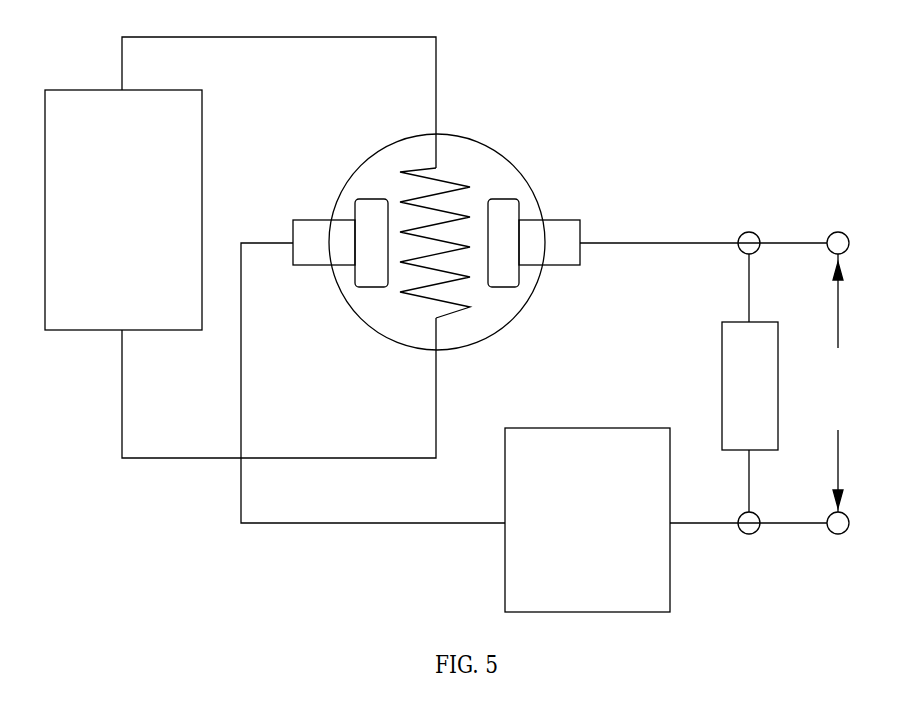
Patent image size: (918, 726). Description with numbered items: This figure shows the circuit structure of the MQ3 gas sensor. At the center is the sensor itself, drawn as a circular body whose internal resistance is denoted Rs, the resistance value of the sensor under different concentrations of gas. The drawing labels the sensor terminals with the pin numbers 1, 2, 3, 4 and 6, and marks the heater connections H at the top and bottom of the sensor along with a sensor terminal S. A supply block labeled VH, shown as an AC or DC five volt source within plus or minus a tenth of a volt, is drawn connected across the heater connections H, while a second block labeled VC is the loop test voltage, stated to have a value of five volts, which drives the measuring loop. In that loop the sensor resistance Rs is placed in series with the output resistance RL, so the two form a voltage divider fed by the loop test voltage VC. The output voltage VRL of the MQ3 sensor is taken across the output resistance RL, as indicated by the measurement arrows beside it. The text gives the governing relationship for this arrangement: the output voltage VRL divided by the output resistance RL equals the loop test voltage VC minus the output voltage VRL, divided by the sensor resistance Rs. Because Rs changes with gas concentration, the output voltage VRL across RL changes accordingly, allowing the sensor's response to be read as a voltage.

The sensor pin 1 (detection electrode) 1 is at (506, 227).
The sensor pin 2 (heater terminal) 2 is at (449, 132).
The sensor pin 3 (detection electrode) 3 is at (507, 303).
The sensor pin 4 (detection electrode) 4 is at (367, 303).
The sensor pin 6 (detection electrode) 6 is at (367, 227).
The sensor resistance Rs is at (436, 230).
The output resistance RL is at (725, 386).
The output voltage VRL is at (830, 383).
The heater voltage source VH is at (123, 210).
The loop test voltage VC is at (587, 520).
The heater terminals H is at (462, 230).
The sensor terminal S is at (455, 367).